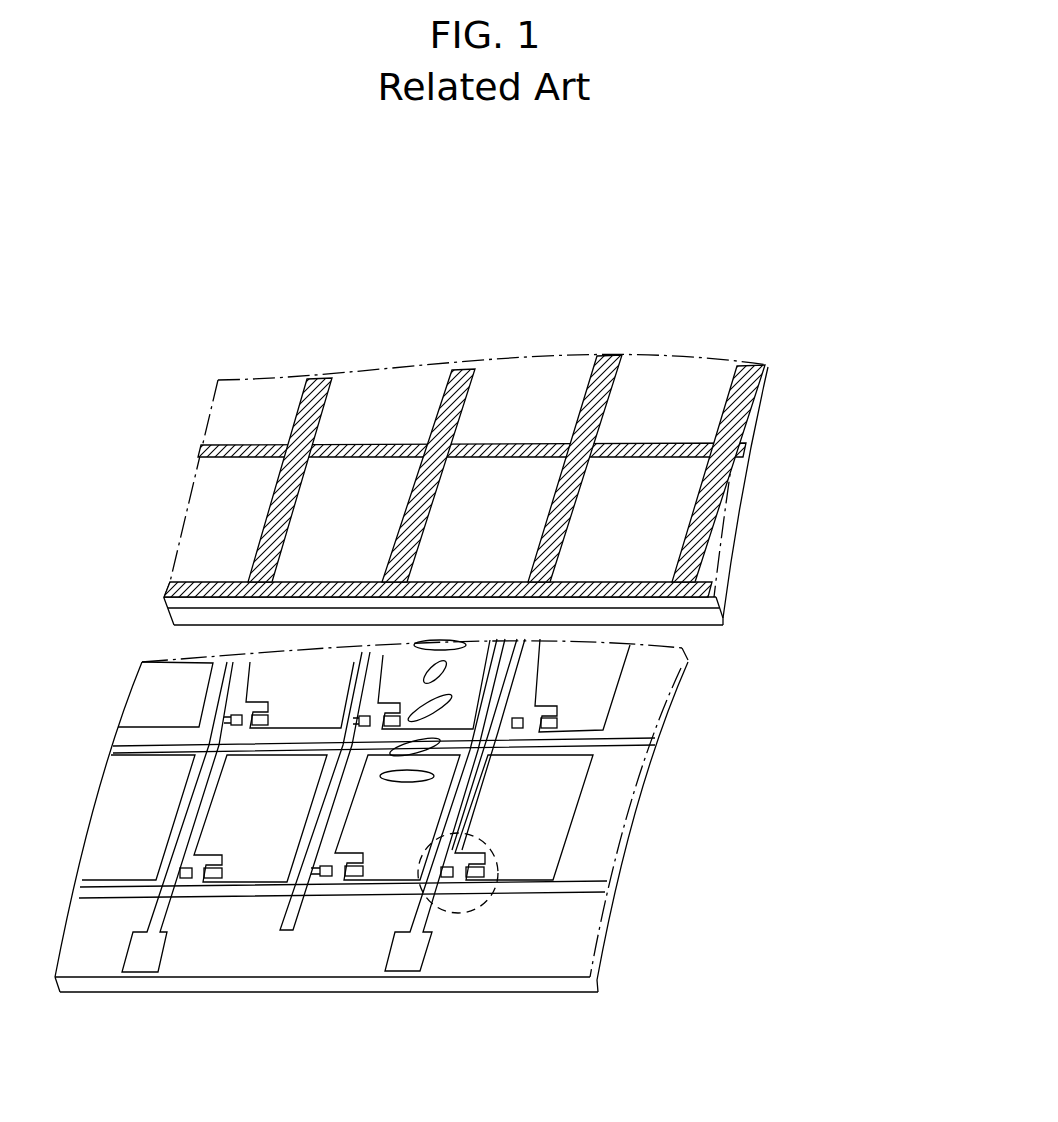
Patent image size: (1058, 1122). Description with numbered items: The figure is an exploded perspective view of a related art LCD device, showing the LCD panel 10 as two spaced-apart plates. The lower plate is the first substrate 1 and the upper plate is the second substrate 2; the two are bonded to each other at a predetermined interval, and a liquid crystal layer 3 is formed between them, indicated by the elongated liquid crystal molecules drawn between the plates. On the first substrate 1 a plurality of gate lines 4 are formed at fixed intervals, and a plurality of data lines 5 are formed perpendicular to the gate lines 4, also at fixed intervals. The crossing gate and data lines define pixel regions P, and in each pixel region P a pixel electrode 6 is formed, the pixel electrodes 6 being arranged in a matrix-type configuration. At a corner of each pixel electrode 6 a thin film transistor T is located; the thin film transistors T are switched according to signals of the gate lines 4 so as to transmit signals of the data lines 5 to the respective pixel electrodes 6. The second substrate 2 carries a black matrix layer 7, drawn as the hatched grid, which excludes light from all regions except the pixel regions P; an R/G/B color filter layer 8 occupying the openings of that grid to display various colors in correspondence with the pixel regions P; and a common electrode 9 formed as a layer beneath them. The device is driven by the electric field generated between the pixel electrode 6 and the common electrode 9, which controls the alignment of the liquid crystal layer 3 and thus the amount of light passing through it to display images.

The first substrate 1 is at (547, 985).
The second substrate 2 is at (705, 603).
The liquid crystal layer 3 is at (425, 703).
The gate line 4 is at (563, 895).
The data line 5 is at (407, 922).
The pixel electrode 6 is at (568, 830).
The black matrix layer 7 is at (743, 450).
The R/G/B color filter layer 8 is at (241, 497).
The common electrode 9 is at (705, 617).
The LCD panel 10 is at (858, 427).
The pixel region P is at (575, 817).
The thin film transistor T is at (460, 913).